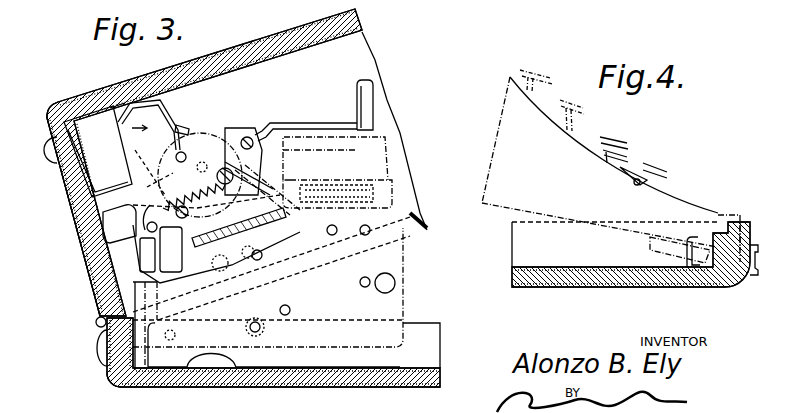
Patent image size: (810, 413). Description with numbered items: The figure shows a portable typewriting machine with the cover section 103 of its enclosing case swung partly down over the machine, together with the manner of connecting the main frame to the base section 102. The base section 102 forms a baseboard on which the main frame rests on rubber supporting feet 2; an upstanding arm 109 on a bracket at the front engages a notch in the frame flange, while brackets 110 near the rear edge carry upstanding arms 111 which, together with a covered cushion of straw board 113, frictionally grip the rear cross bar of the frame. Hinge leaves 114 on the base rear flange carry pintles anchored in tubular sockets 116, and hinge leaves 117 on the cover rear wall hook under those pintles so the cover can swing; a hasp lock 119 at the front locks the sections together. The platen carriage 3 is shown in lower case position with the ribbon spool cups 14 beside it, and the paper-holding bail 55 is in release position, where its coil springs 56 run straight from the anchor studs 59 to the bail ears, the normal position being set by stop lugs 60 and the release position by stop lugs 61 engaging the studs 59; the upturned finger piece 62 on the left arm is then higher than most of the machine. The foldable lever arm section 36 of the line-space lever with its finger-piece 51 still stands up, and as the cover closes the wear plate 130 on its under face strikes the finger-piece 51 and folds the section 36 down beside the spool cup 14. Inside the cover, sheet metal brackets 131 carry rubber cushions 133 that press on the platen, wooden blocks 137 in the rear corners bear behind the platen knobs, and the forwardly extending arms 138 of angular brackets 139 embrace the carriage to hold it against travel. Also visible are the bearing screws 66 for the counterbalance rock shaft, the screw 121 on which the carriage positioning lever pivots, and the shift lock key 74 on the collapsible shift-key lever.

In FIG. 3, the rubber supporting feet 2 is at (237, 367).
In FIG. 4, the rubber supporting feet 2 is at (650, 247).
In FIG. 3, the platen carriage 3 is at (232, 133).
In FIG. 3, the ribbon spool cup 14 is at (387, 141).
In FIG. 3, the foldable lever arm section 36 is at (317, 124).
In FIG. 3, the finger-piece 51 is at (370, 95).
In FIG. 3, the paper-holding bail 55 is at (152, 131).
In FIG. 3, the coil springs 56 is at (173, 133).
In FIG. 3, the studs 59 is at (204, 186).
In FIG. 3, the stop lugs 60 is at (158, 142).
In FIG. 3, the stop lugs 61 is at (157, 163).
In FIG. 3, the finger piece 62 is at (180, 127).
In FIG. 3, the bearing screws 66 is at (178, 337).
In FIG. 4, the shift lock key 74 is at (623, 150).
In FIG. 3, the base section 102 is at (441, 360).
In FIG. 4, the base section 102 is at (555, 258).
In FIG. 3, the cover section 103 is at (362, 50).
In FIG. 4, the upstanding arm 109 is at (693, 273).
In FIG. 3, the brackets 110 is at (185, 362).
In FIG. 3, the upstanding arms 111 is at (132, 378).
In FIG. 3, the sheet of straw board 113 is at (115, 366).
In FIG. 3, the hinge leaves 114 is at (102, 367).
In FIG. 3, the tubular sockets 116 is at (96, 323).
In FIG. 3, the hinge leaves 117 is at (93, 300).
In FIG. 4, the hasp lock 119 is at (752, 242).
In FIG. 3, the screw 121 is at (131, 197).
In FIG. 3, the wear plate 130 is at (311, 48).
In FIG. 3, the sheet metal brackets 131 is at (133, 100).
In FIG. 3, the rubber cushions 133 is at (75, 165).
In FIG. 3, the wooden blocks 137 is at (75, 110).
In FIG. 3, the forwardly extending arms 138 is at (100, 233).
In FIG. 3, the angular brackets 139 is at (110, 220).